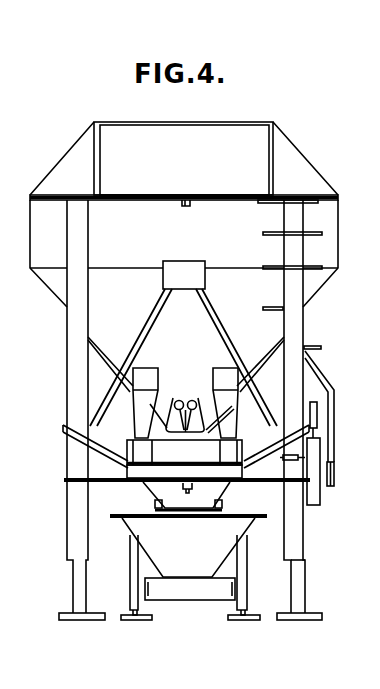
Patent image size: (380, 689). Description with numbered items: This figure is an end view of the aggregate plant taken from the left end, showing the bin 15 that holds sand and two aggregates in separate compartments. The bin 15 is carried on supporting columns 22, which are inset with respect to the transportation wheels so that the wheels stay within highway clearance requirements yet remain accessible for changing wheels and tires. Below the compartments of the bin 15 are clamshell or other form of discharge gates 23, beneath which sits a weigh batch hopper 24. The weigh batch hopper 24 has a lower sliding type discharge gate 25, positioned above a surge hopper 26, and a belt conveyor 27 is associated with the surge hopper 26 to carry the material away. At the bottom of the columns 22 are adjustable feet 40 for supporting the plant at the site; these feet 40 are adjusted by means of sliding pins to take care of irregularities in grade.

The bin 15 is at (190, 241).
The supporting columns 22 is at (76, 329).
The discharge gates 23 is at (201, 401).
The weigh batch hopper 24 is at (215, 493).
The sliding type discharge gate 25 is at (157, 508).
The surge hopper 26 is at (194, 553).
The belt conveyor 27 is at (196, 591).
The adjustable feet 40 is at (298, 598).